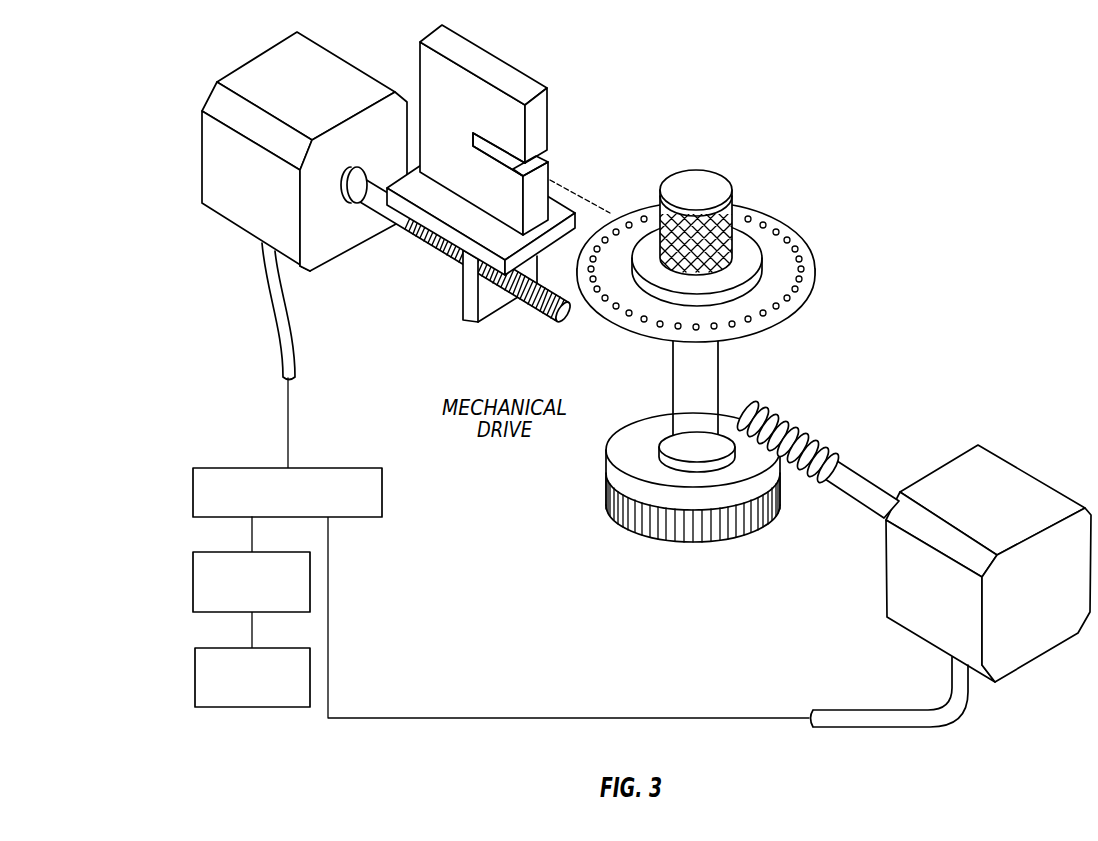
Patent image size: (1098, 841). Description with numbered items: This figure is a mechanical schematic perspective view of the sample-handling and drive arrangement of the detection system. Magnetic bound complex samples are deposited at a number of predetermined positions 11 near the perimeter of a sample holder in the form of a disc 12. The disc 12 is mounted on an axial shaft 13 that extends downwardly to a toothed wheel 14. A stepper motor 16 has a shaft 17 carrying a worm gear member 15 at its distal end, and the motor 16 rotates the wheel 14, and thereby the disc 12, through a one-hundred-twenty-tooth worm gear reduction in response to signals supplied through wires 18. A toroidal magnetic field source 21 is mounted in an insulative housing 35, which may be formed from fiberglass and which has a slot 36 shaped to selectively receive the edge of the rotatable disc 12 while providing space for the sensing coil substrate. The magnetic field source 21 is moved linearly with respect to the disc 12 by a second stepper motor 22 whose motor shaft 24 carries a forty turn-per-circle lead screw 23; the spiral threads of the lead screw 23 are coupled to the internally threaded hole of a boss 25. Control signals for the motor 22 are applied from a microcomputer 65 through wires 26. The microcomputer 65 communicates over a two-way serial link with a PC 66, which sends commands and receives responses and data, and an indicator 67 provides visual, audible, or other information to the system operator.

The predetermined positions 11 is at (652, 212).
The disc 12 is at (642, 303).
The axial shaft 13 is at (705, 180).
The toothed wheel 14 is at (635, 430).
The worm gear member 15 is at (785, 415).
The stepper motor 16 is at (1013, 663).
The shaft 17 is at (850, 466).
The wires 18 is at (880, 713).
The magnetic field source 21 is at (517, 130).
The stepper motor 22 is at (208, 157).
The lead screw 23 is at (543, 313).
The motor shaft 24 is at (407, 232).
The boss 25 is at (457, 260).
The wires 26 is at (283, 341).
The insulative housing 35 is at (495, 67).
The slot 36 is at (513, 167).
The microcomputer 65 is at (193, 493).
The PC 66 is at (193, 582).
The indicator 67 is at (195, 677).